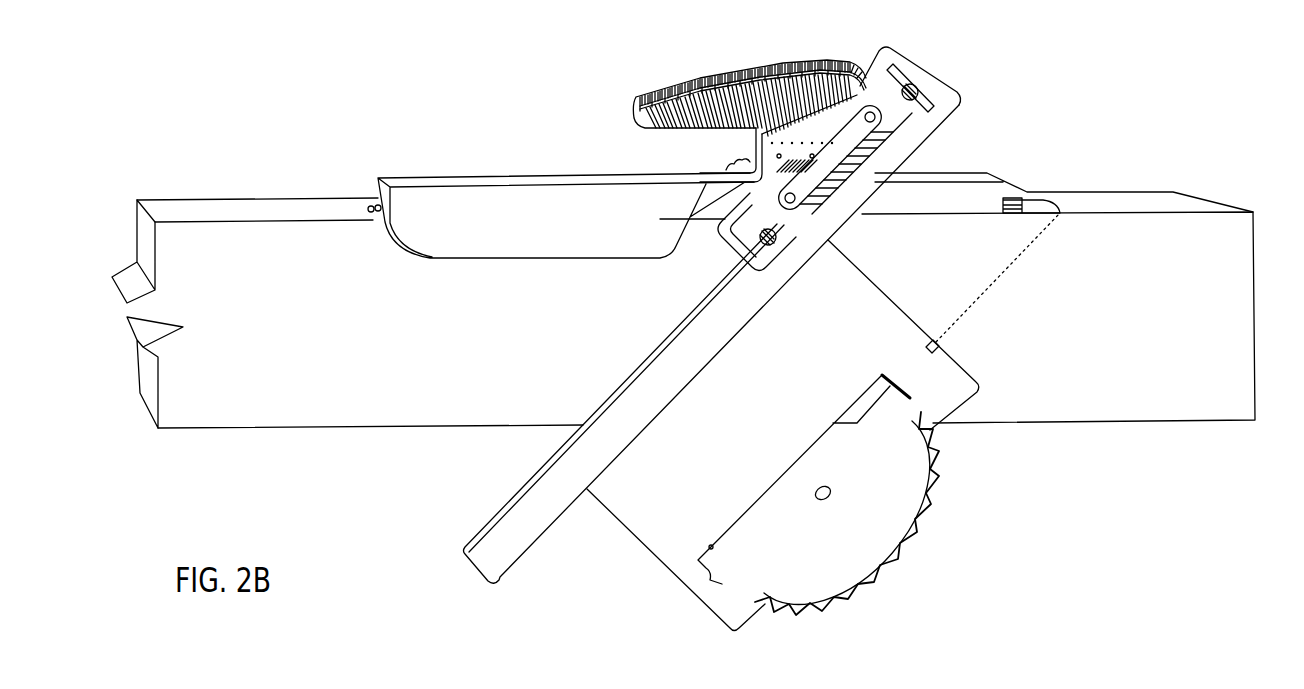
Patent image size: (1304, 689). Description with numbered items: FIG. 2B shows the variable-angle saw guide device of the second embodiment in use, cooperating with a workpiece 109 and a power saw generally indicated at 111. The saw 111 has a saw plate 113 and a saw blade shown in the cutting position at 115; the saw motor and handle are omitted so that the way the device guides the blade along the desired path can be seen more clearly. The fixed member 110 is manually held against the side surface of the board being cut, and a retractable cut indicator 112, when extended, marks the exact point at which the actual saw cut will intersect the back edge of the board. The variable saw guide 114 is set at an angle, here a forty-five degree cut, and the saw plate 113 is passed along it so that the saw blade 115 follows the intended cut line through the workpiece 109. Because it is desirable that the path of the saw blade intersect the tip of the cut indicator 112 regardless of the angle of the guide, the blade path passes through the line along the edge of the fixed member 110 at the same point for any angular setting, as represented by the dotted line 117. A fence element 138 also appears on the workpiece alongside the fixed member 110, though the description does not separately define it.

The workpiece 109 is at (1166, 203).
The fixed member 110 is at (758, 68).
The saw 111 is at (660, 588).
The retractable cut indicator 112 is at (1050, 197).
The saw plate 113 is at (622, 532).
The variable saw guide 114 is at (650, 368).
The saw blade 115 is at (898, 560).
The dotted line 117 is at (987, 288).
The fence 138 is at (373, 206).